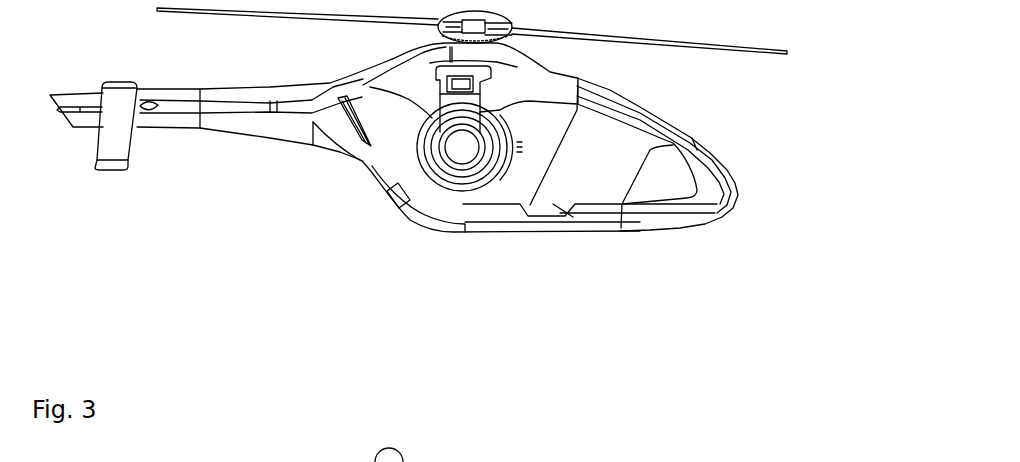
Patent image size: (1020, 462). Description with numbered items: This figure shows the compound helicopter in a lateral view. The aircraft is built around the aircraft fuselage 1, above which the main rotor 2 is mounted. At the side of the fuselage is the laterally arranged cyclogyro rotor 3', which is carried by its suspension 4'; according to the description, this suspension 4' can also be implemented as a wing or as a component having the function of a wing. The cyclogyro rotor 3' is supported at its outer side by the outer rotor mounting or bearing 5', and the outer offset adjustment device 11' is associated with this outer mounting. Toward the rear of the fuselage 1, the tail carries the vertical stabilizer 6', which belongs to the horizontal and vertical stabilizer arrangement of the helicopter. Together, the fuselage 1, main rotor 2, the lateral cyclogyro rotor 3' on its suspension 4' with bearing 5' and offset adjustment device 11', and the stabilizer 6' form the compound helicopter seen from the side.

The aircraft fuselage 1 is at (593, 182).
The main rotor 2 is at (723, 47).
The cyclogyro rotor 3' is at (492, 229).
The suspension of the cyclogyro rotor 4' is at (531, 240).
The outer rotor mounting or bearing 5' is at (406, 191).
The vertical stabilizer 6' is at (196, 197).
The outer offset adjustment device 11' is at (374, 137).